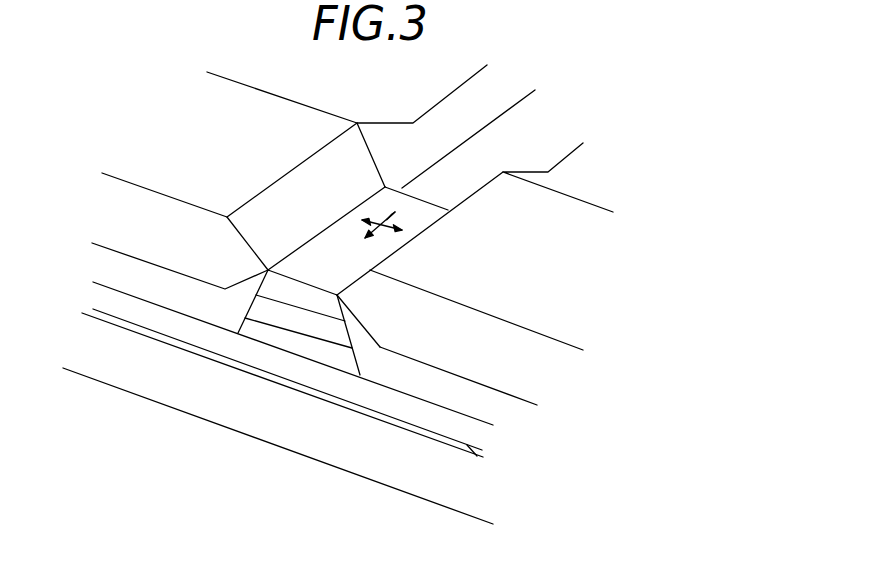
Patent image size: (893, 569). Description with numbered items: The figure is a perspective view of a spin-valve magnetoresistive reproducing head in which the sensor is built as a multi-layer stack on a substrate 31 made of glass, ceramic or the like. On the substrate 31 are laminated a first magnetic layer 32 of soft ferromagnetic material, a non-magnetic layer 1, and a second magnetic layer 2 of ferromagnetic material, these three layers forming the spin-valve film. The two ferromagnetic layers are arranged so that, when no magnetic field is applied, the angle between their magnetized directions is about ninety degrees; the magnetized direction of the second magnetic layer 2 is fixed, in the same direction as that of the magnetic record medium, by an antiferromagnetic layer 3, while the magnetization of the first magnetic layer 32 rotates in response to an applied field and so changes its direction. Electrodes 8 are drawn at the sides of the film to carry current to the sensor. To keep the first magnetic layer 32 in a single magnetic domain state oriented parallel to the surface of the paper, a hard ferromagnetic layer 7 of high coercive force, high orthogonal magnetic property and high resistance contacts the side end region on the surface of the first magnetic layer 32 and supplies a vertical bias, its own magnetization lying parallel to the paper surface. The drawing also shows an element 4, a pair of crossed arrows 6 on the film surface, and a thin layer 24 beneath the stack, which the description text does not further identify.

The non-magnetic layer 1 is at (298, 347).
The second magnetic layer 2 is at (333, 335).
The antiferromagnetic layer 3 is at (293, 292).
The upper surface layer 4 is at (408, 213).
The direction arrows 6 is at (380, 237).
The hard ferromagnetic layer 7 is at (133, 267).
The electrodes 8 is at (187, 138).
The thin film layer 24 is at (475, 455).
The substrate 31 is at (408, 483).
The first magnetic layer 32 is at (473, 432).